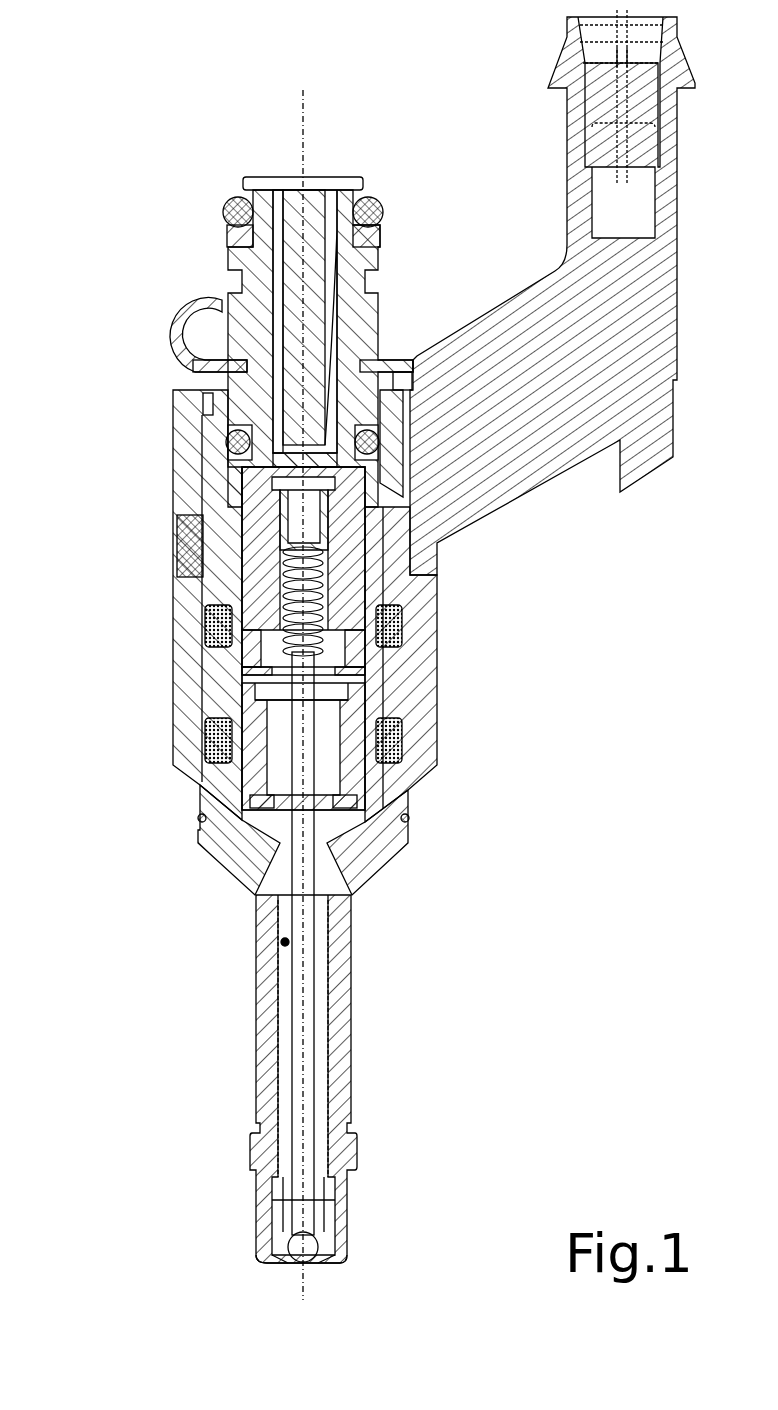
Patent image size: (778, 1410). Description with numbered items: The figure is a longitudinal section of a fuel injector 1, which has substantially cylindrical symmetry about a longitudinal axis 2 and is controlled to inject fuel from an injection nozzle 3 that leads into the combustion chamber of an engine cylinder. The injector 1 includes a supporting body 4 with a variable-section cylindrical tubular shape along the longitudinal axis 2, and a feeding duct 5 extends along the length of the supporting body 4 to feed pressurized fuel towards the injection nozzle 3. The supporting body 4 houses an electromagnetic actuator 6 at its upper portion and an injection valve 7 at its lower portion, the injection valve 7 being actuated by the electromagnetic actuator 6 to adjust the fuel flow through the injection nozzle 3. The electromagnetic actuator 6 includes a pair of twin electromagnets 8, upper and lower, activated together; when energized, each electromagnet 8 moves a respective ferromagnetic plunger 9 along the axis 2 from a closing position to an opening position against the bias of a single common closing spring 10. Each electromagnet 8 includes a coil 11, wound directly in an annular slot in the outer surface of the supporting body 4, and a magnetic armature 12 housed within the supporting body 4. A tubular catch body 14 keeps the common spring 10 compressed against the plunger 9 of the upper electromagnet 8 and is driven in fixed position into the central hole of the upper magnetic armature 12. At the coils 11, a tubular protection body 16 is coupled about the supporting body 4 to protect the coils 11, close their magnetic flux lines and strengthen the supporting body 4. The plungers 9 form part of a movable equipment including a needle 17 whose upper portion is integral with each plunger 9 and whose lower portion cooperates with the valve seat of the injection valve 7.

The fuel injector 1 is at (613, 963).
The longitudinal axis 2 is at (310, 121).
The injection nozzle 3 is at (272, 1279).
The supporting body 4 is at (337, 935).
The feeding duct 5 is at (284, 942).
The electromagnetic actuator 6 is at (526, 679).
The injection valve 7 is at (380, 1244).
The electromagnet 8 is at (475, 623).
The plunger 9 is at (222, 658).
The closing spring 10 is at (283, 580).
The coil 11 is at (217, 627).
The magnetic armature 12 is at (252, 505).
The catch body 14 is at (280, 535).
The protection body 16 is at (188, 683).
The needle 17 is at (307, 1003).